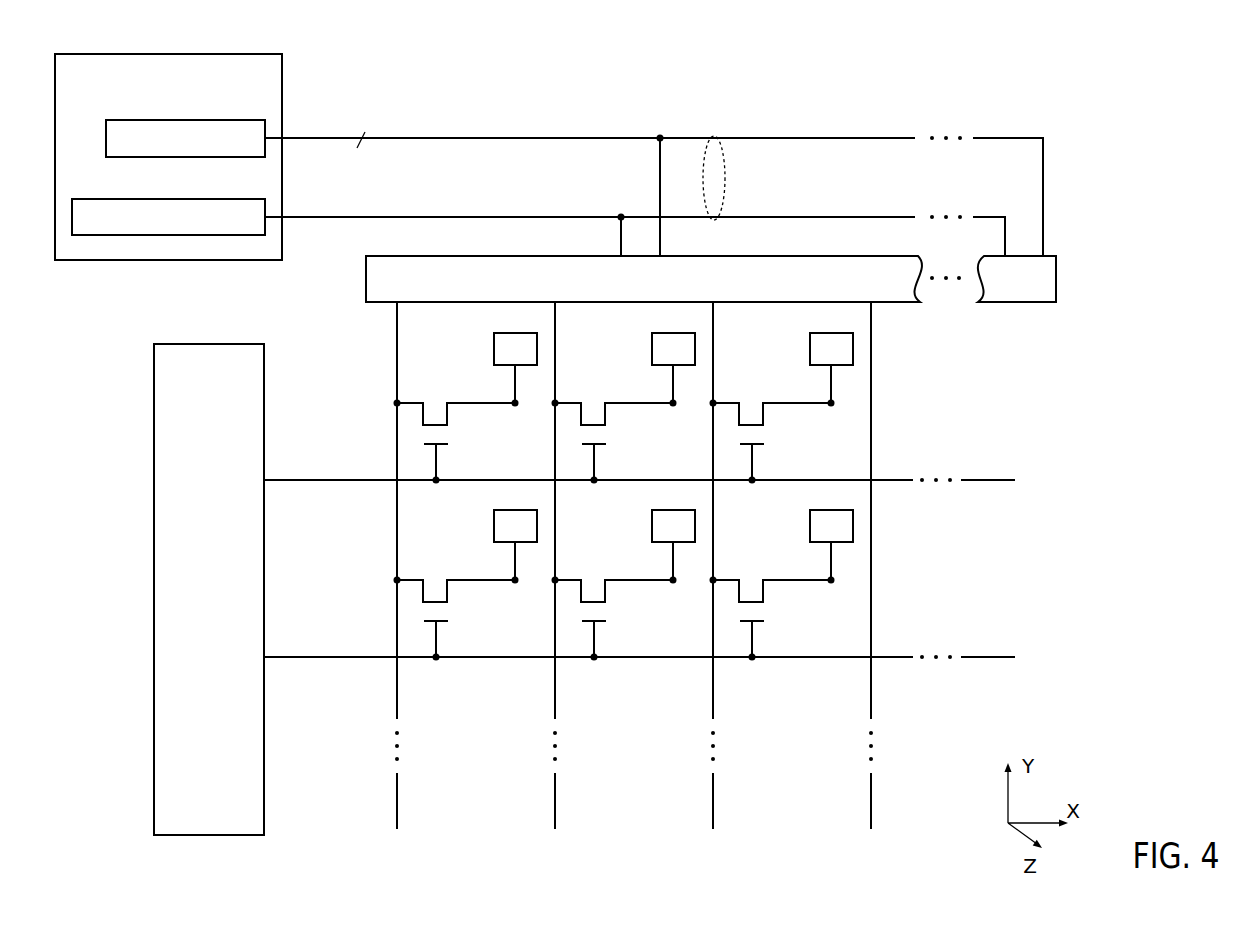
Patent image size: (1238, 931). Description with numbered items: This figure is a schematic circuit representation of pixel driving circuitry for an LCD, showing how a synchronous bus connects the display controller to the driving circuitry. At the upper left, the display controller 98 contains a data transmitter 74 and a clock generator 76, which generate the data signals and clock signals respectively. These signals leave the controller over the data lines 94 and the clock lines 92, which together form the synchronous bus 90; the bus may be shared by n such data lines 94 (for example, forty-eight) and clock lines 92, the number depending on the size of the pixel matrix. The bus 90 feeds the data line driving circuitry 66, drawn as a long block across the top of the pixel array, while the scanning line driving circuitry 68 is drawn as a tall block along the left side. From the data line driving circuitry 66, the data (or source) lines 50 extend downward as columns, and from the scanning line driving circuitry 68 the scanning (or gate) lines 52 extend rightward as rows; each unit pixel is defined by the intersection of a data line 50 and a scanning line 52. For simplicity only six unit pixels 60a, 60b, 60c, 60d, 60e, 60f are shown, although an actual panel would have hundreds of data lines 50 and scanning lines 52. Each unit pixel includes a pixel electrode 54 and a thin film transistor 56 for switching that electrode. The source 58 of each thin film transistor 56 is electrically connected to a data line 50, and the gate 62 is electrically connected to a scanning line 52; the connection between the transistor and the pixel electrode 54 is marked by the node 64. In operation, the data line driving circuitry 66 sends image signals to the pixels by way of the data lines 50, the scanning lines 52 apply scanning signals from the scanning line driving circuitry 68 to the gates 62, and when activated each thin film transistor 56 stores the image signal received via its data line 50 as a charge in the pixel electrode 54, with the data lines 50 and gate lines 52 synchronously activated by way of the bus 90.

The display controller 98 is at (283, 82).
The data transmitter 74 is at (205, 120).
The clock generator 76 is at (205, 199).
The data lines 94 is at (447, 138).
The clock lines 92 is at (395, 217).
The synchronous bus 90 is at (719, 124).
The data line driving circuitry 66 is at (783, 257).
The scanning line driving circuitry 68 is at (243, 344).
The scanning line 52 is at (287, 480).
The data line 50 is at (398, 792).
The unit pixel 60a is at (410, 357).
The unit pixel 60b is at (572, 338).
The unit pixel 60c is at (726, 342).
The unit pixel 60d is at (410, 517).
The unit pixel 60e is at (568, 518).
The unit pixel 60f is at (726, 522).
The pixel electrode 54 is at (497, 333).
The connection node to pixel electrode 64 is at (511, 403).
The source 58 is at (400, 401).
The thin film transistor 56 is at (461, 434).
The gate 62 is at (439, 478).